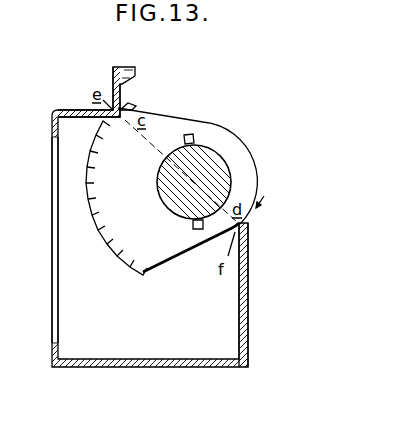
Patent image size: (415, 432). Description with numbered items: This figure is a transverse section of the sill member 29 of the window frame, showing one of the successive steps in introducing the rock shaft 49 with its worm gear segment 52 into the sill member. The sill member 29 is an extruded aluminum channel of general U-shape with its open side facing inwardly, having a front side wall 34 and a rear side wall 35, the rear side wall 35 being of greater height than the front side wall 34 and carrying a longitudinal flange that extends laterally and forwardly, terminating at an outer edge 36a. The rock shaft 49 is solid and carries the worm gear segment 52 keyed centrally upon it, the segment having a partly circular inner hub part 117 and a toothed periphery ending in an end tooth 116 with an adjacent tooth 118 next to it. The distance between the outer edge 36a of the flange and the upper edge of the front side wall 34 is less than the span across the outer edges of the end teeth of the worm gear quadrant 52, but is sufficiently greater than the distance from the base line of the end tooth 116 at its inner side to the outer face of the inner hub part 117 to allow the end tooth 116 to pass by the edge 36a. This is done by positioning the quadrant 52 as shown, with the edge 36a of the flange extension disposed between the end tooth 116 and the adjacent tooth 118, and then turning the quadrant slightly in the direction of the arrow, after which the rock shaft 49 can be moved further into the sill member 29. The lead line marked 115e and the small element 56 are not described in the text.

The sill member 29 is at (46, 127).
The adjacent tooth 118 is at (107, 118).
The end tooth 116 is at (130, 104).
The partly circular inner hub part 117 is at (243, 172).
The worm gear segment 52 is at (173, 128).
The rock shaft 49 is at (223, 189).
The tab 56 is at (190, 138).
The outer edge of the flange 36a is at (125, 125).
The lever 115e is at (143, 272).
The rear side wall 35 is at (52, 297).
The front side wall 34 is at (250, 305).